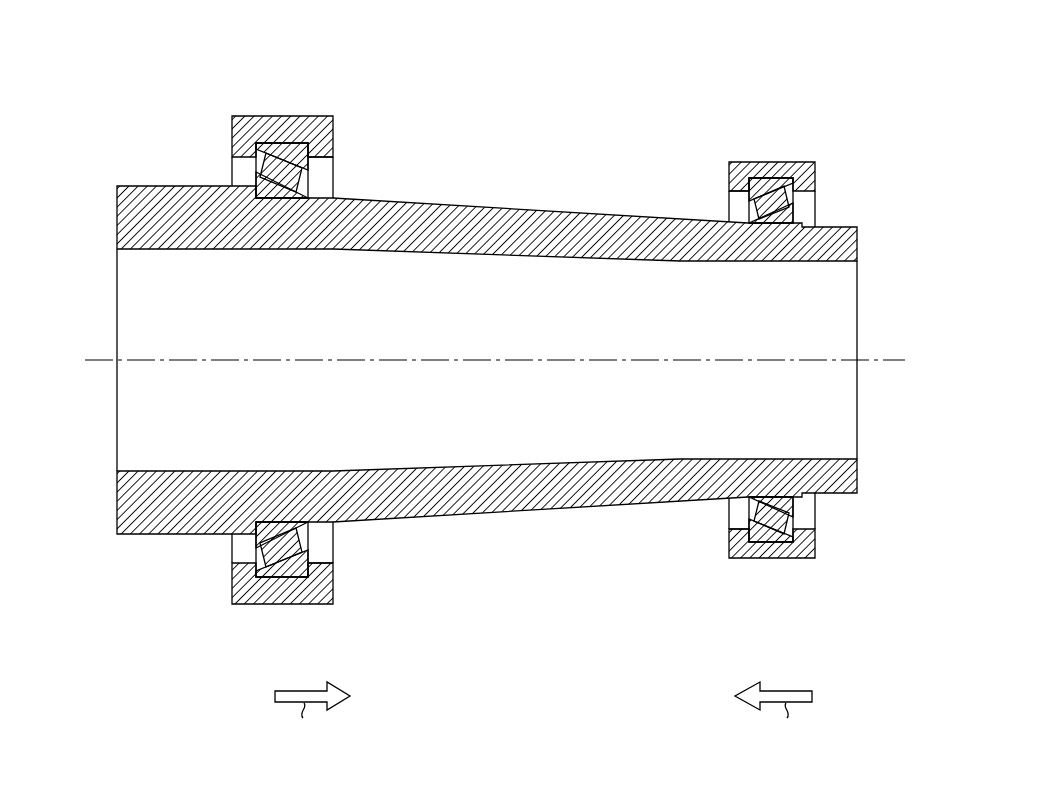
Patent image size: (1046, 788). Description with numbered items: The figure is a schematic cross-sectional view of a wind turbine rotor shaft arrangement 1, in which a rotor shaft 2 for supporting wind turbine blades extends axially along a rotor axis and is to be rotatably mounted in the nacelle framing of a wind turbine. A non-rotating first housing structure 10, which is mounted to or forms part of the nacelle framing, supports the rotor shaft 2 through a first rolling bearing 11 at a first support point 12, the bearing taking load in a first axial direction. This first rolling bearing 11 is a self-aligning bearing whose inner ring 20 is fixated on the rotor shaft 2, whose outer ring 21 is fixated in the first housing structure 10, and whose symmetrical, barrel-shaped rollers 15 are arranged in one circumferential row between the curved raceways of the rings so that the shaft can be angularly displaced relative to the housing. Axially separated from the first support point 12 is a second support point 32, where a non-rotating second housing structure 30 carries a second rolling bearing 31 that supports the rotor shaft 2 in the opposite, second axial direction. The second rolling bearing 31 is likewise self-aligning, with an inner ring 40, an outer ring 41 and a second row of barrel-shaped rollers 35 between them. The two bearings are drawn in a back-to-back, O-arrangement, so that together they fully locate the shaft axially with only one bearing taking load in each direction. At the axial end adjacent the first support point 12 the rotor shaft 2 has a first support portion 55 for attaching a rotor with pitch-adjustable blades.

The wind turbine rotor shaft arrangement 1 is at (115, 108).
The rotor shaft 2 is at (423, 225).
The first housing structure 10 is at (279, 128).
The first rolling bearing 11 is at (336, 171).
The first support point 12 is at (247, 90).
The rollers 15 is at (270, 158).
The inner ring 20 is at (282, 200).
The outer ring 21 is at (307, 143).
The second housing structure 30 is at (770, 162).
The second rolling bearing 31 is at (717, 198).
The second support point 32 is at (738, 132).
The rollers 35 is at (782, 190).
The inner ring 40 is at (780, 223).
The outer ring 41 is at (747, 180).
The first support portion 55 is at (248, 787).